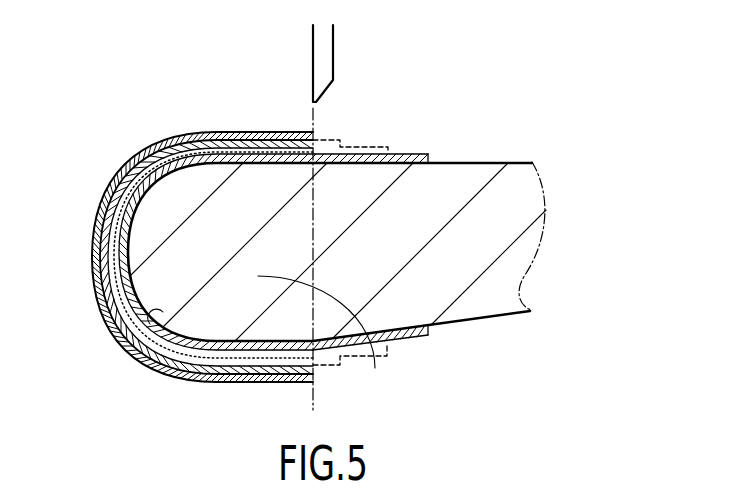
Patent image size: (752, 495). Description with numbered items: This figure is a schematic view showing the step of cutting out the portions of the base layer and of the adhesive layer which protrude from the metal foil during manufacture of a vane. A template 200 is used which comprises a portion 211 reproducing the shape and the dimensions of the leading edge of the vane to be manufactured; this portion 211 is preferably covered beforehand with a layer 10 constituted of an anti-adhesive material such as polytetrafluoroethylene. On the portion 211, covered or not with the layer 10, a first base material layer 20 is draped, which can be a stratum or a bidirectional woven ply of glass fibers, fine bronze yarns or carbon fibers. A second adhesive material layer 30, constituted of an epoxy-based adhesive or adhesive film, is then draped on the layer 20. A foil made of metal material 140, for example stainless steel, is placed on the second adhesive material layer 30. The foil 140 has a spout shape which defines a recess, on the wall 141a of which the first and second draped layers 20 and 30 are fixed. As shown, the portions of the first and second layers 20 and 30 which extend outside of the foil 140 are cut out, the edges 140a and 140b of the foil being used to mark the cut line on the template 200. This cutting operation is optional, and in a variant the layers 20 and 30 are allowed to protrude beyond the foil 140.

The layer of anti-adhesive material 10 is at (407, 153).
The first base material layer 20 is at (162, 167).
The second adhesive material layer 30 is at (248, 142).
The foil made of metal material 140 is at (196, 138).
The edge of the foil 140a is at (315, 375).
The edge of the foil 140b is at (315, 131).
The wall of the recess 141a is at (158, 349).
The template 200 is at (487, 135).
The portion of the template 211 is at (325, 334).